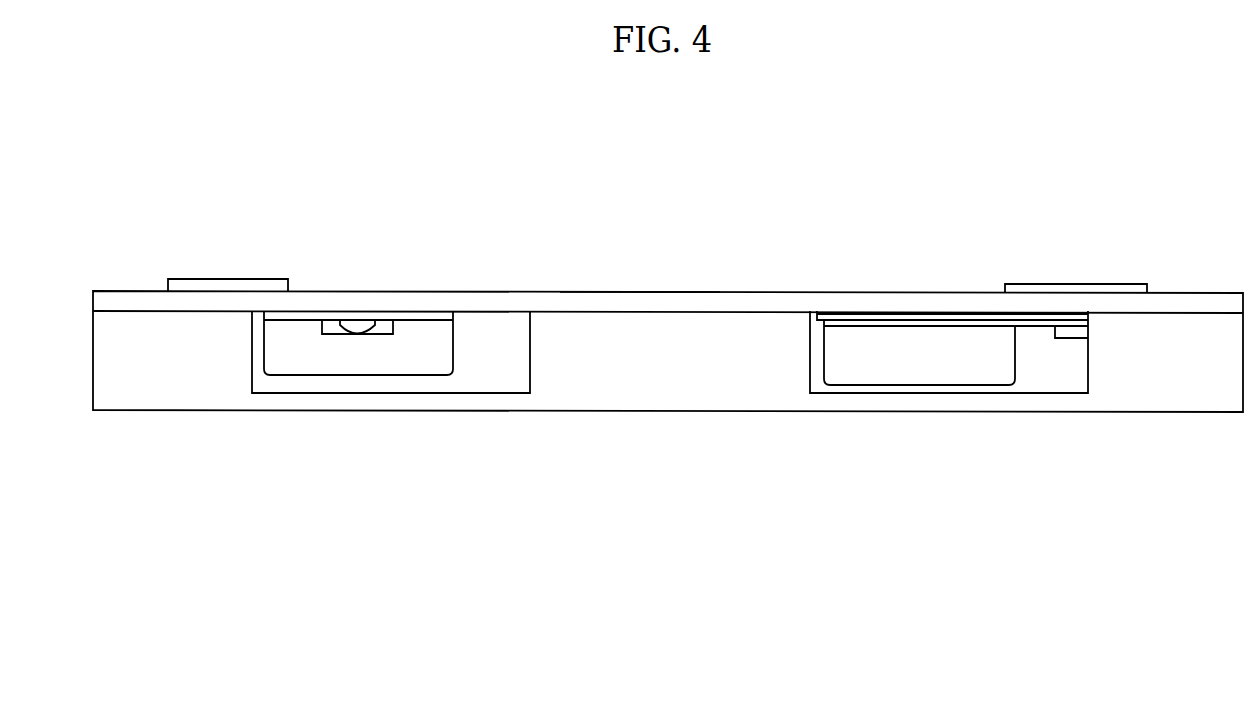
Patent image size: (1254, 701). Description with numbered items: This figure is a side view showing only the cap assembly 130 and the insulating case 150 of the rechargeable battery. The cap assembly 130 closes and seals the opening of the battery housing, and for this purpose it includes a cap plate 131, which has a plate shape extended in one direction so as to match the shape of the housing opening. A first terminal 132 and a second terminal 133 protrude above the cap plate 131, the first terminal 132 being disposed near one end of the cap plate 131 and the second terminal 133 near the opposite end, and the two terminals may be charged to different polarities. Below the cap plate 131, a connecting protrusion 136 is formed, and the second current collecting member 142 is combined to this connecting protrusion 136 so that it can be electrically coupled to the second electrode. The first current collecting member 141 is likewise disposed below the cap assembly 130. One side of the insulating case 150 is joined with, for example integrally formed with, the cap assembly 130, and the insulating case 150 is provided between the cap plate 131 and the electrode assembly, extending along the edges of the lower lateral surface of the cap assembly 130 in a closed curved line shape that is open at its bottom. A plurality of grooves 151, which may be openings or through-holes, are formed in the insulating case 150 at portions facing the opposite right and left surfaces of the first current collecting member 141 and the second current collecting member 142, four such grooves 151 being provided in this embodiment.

The cap assembly 130 is at (461, 278).
The cap plate 131 is at (632, 302).
The first terminal 132 is at (1042, 288).
The second terminal 133 is at (252, 287).
The connecting protrusion 136 is at (353, 322).
The first current collecting member 141 is at (893, 362).
The second current collecting member 142 is at (320, 360).
The insulating case 150 is at (733, 432).
The groove 151 is at (511, 355).